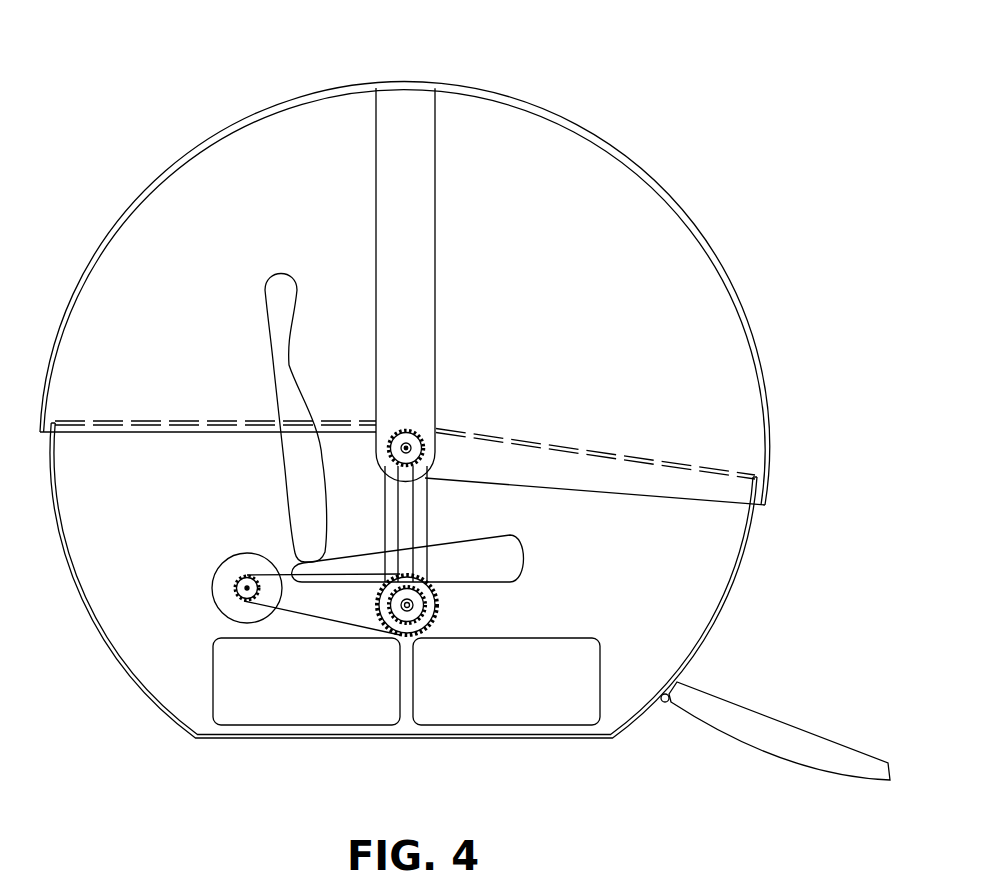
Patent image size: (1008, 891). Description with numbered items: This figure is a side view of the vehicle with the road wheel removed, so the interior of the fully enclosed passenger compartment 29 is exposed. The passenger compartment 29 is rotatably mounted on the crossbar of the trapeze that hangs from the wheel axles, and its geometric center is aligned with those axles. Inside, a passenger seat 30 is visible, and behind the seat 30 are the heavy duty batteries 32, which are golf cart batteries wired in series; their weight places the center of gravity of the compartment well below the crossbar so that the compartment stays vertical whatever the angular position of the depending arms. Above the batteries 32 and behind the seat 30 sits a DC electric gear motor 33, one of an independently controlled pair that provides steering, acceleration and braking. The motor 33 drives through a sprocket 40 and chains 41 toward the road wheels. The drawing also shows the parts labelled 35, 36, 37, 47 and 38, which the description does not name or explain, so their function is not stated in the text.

The passenger compartment 29 is at (503, 62).
The upper housing half 35 is at (173, 165).
The lower housing half 36 is at (658, 186).
The passenger seat 30 is at (278, 348).
The pivot gear 37 is at (407, 447).
The pivot shaft 47 is at (425, 448).
The chains 41 is at (428, 515).
The DC electric gear motor 33 is at (220, 575).
The sprocket 40 is at (435, 611).
The batteries 32 is at (287, 696).
The stand foot 38 is at (812, 732).